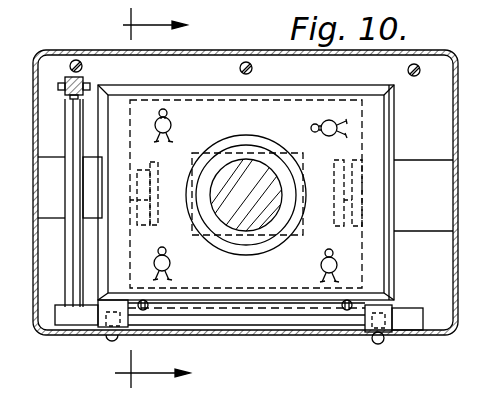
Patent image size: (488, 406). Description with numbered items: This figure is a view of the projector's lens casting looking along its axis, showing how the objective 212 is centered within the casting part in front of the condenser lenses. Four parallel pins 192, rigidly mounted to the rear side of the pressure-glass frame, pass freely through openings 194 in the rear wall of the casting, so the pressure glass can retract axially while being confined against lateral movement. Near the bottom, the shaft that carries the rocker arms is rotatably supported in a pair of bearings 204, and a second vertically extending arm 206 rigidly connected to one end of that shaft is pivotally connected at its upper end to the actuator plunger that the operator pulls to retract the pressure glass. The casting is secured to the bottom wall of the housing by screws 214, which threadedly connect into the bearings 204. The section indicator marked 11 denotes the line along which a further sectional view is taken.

The section line 11- 11 is at (154, 198).
The parallel pins 192 is at (170, 131).
The openings 194 is at (169, 116).
The bearings 204 is at (99, 318).
The second vertically extending arm 206 is at (68, 213).
The objective 212 is at (255, 252).
The screws 214 is at (112, 333).